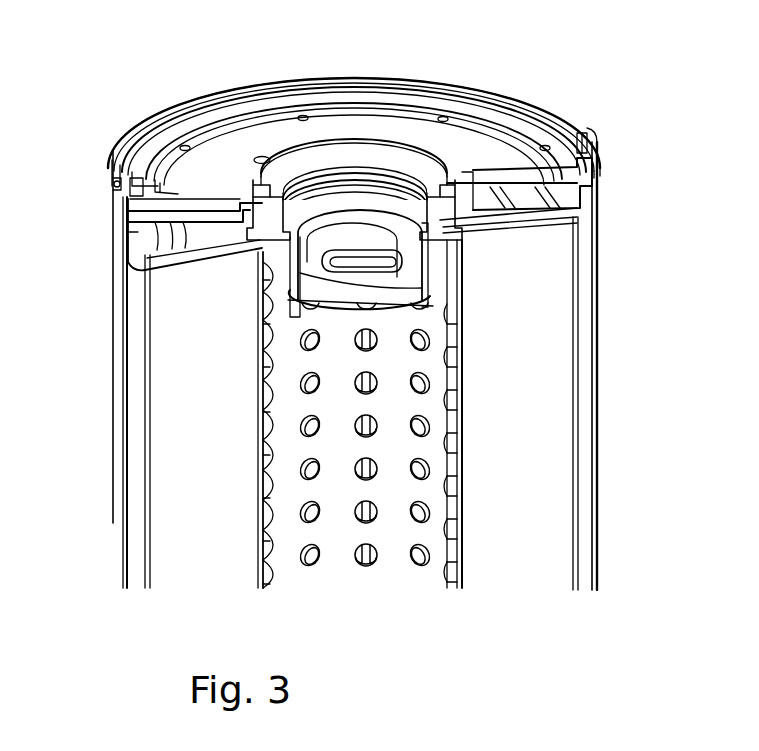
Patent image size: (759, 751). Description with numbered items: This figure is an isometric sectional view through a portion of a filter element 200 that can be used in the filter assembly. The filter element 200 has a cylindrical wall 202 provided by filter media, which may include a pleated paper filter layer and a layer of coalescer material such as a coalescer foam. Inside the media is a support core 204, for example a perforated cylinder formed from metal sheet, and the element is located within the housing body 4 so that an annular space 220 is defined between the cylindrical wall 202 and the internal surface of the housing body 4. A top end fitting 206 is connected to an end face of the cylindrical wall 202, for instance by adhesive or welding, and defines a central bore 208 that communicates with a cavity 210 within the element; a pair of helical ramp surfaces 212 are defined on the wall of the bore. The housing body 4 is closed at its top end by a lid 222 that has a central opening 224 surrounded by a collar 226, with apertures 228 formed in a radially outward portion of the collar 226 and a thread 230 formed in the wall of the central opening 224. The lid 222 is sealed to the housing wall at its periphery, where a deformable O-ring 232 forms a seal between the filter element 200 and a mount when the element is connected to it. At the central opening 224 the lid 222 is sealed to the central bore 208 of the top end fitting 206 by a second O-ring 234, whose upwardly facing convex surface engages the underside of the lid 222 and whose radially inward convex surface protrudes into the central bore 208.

The filter element 200 is at (622, 188).
The cylindrical wall 202 is at (540, 420).
The support core 204 is at (437, 572).
The top end fitting 206 is at (197, 257).
The central bore 208 is at (383, 227).
The cavity 210 is at (398, 385).
The helical ramp surfaces 212 is at (383, 287).
The annular space 220 is at (128, 367).
The lid 222 is at (253, 113).
The central opening 224 is at (383, 155).
The collar 226 is at (135, 197).
The apertures 228 is at (256, 160).
The thread 230 is at (333, 163).
The O-ring 232 is at (125, 141).
The O-ring 234 is at (448, 209).
The housing body 4 is at (597, 531).